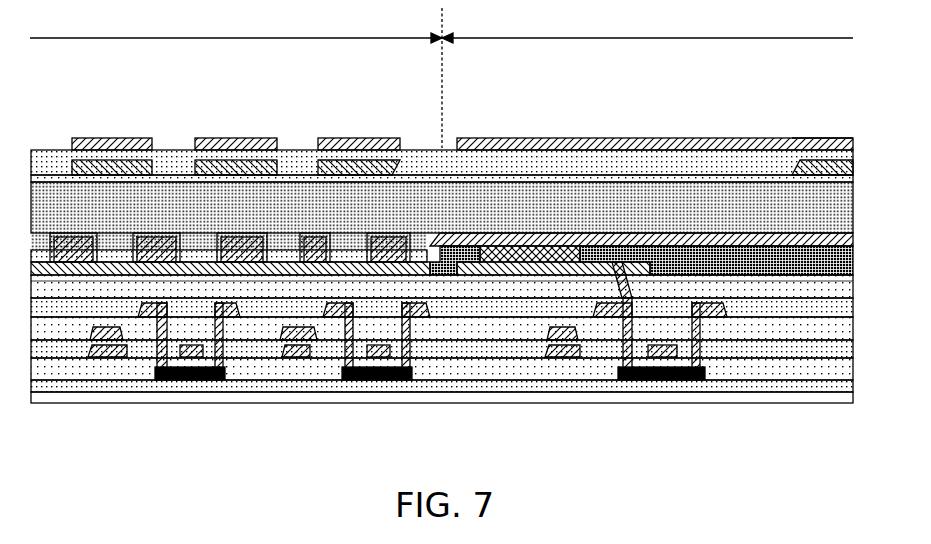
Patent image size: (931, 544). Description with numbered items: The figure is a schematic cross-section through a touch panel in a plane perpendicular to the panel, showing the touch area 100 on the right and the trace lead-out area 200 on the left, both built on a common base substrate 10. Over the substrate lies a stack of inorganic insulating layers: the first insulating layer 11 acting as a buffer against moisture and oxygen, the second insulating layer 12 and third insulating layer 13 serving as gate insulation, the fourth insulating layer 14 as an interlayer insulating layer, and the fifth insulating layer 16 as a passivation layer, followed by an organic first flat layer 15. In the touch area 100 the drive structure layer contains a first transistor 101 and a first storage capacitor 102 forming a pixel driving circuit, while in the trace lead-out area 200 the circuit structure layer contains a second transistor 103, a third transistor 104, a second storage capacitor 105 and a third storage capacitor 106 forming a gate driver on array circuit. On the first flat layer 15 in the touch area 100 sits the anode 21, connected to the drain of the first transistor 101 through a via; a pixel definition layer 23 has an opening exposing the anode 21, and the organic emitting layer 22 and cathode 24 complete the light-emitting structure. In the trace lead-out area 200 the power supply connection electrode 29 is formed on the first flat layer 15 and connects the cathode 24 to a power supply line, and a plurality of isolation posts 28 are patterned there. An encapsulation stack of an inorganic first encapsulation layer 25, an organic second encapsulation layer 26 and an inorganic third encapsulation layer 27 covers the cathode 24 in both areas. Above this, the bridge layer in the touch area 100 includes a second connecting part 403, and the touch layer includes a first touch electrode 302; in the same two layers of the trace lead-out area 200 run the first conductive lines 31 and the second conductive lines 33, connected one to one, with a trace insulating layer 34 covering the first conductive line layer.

The base substrate 10 is at (822, 400).
The first insulating layer 11 is at (782, 392).
The second insulating layer 12 is at (745, 367).
The third insulating layer 13 is at (500, 343).
The fourth insulating layer 14 is at (452, 328).
The first flat layer 15 is at (748, 293).
The fifth insulating layer 16 is at (43, 300).
The anode 21 is at (620, 232).
The organic emitting layer 22 is at (524, 235).
The pixel definition layer 23 is at (711, 283).
The cathode 24 is at (658, 232).
The first encapsulation layer 25 is at (460, 232).
The second encapsulation layer 26 is at (418, 182).
The third encapsulation layer 27 is at (785, 173).
The isolation posts 28 is at (155, 255).
The power supply connection electrode 29 is at (297, 262).
The first conductive lines 31 is at (372, 175).
The second conductive lines 33 is at (333, 140).
The trace insulating layer 34 is at (55, 165).
The touch area 100 is at (647, 28).
The first transistor 101 is at (666, 391).
The first storage capacitor 102 is at (565, 369).
The second transistor 103 is at (386, 393).
The third transistor 104 is at (193, 392).
The second storage capacitor 105 is at (287, 371).
The third storage capacitor 106 is at (97, 371).
The trace lead-out area 200 is at (236, 78).
The first touch electrode 302 is at (572, 143).
The second connecting part 403 is at (830, 153).